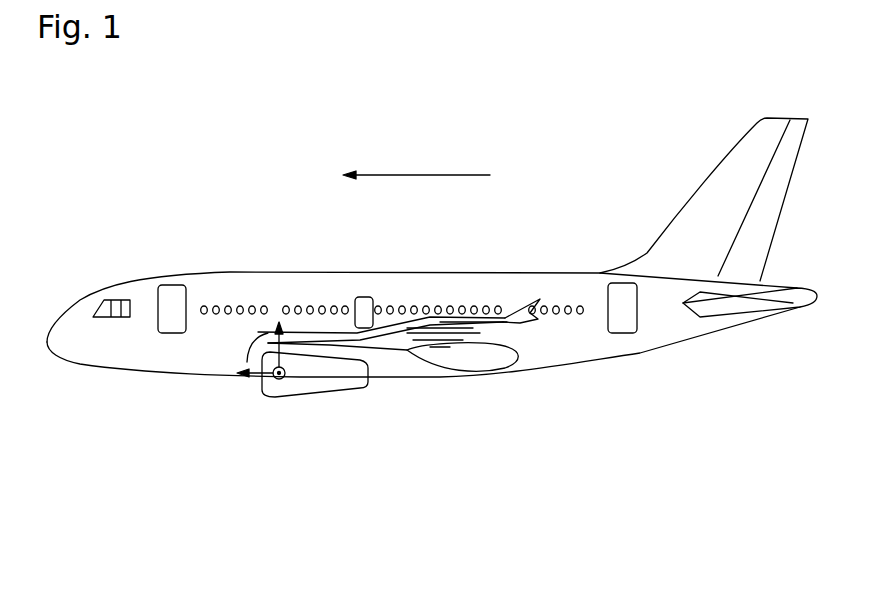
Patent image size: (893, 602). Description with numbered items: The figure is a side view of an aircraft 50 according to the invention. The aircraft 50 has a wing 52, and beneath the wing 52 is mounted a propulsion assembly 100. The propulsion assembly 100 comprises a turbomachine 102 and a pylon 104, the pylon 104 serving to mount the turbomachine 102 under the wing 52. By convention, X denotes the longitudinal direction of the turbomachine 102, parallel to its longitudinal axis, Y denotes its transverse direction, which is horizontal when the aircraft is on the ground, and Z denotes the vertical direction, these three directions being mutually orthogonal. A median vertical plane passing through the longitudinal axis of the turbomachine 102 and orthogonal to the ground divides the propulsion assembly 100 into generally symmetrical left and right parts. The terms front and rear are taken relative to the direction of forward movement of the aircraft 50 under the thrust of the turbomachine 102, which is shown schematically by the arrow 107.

The aircraft 50 is at (237, 228).
The wing 52 is at (418, 332).
The propulsion assembly 100 is at (567, 405).
The turbomachine 102 is at (307, 386).
The pylon 104 is at (378, 350).
The arrow 107 is at (416, 156).